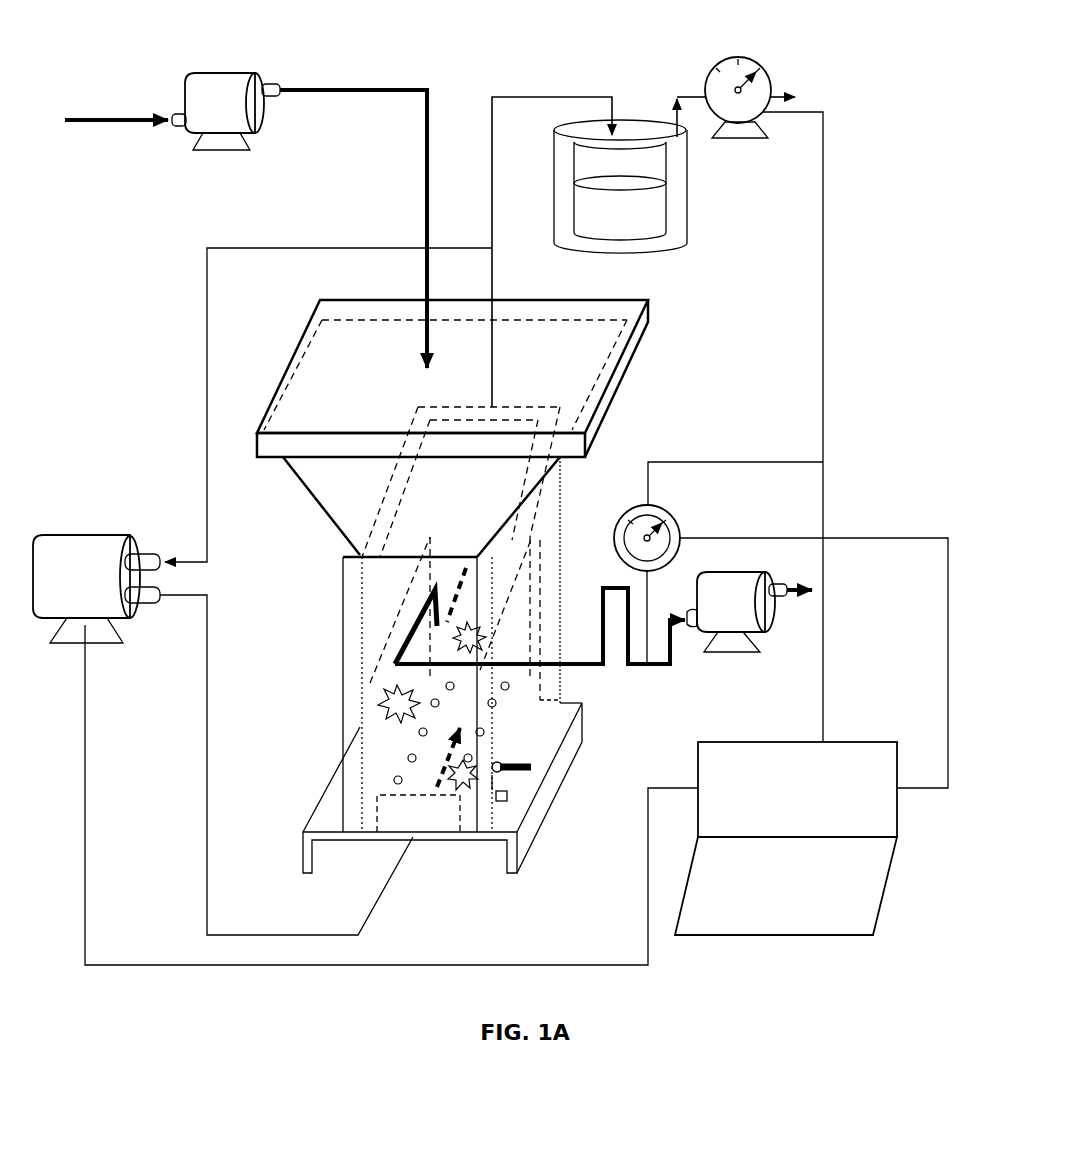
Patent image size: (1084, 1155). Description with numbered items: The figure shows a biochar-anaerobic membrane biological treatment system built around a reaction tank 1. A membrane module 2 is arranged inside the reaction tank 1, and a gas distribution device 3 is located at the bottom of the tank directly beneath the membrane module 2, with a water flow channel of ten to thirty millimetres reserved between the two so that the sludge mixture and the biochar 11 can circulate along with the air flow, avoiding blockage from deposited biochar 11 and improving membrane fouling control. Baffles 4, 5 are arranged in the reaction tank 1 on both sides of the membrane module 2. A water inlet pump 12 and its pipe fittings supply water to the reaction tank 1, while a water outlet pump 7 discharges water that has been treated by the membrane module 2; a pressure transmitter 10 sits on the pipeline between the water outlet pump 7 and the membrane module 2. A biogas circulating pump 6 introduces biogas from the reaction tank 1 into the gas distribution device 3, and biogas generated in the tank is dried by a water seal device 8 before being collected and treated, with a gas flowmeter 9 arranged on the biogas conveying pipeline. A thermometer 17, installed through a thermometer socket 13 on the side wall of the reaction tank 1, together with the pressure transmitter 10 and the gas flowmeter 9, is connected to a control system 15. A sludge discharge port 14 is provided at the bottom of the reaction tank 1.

The reaction tank 1 is at (442, 665).
The membrane module 2 is at (418, 773).
The gas distribution device 3 is at (421, 700).
The baffle 4 is at (372, 645).
The baffle 5 is at (537, 644).
The biogas circulating pump 6 is at (96, 568).
The water outlet pump 7 is at (749, 629).
The water seal device 8 is at (620, 205).
The gas flowmeter 9 is at (738, 115).
The pressure transmitter 10 is at (664, 525).
The biochar 11 is at (383, 708).
The water inlet pump 12 is at (226, 89).
The thermometer socket 13 is at (510, 783).
The sludge discharge port 14 is at (510, 802).
The control system 15 is at (786, 838).
The thermometer 17 is at (534, 768).